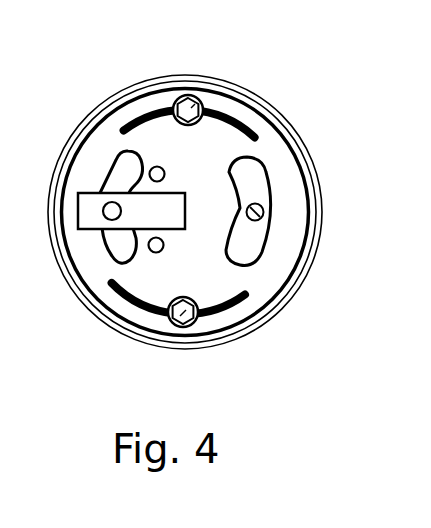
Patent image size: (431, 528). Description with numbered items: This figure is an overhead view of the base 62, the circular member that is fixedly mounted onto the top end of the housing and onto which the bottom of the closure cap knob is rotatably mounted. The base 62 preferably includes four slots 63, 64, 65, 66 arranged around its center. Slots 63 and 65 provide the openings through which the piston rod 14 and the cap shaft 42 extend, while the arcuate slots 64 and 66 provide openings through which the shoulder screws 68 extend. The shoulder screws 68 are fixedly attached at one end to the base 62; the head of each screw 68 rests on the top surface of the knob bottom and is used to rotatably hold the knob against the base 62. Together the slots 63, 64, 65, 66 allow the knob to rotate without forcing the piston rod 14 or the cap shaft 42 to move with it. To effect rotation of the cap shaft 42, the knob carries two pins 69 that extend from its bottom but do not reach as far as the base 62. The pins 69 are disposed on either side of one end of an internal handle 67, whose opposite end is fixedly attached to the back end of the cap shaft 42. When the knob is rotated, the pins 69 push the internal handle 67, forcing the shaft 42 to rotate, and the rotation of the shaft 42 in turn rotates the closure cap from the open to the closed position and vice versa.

The piston rod 14 is at (264, 215).
The cap shaft 42 is at (103, 210).
The base 62 is at (223, 220).
The slot 63 is at (250, 178).
The slot 64 is at (151, 113).
The slot 65 is at (123, 166).
The slot 66 is at (232, 306).
The internal handle 67 is at (158, 216).
The shoulder screws 68 is at (202, 96).
The pins 69 is at (164, 168).